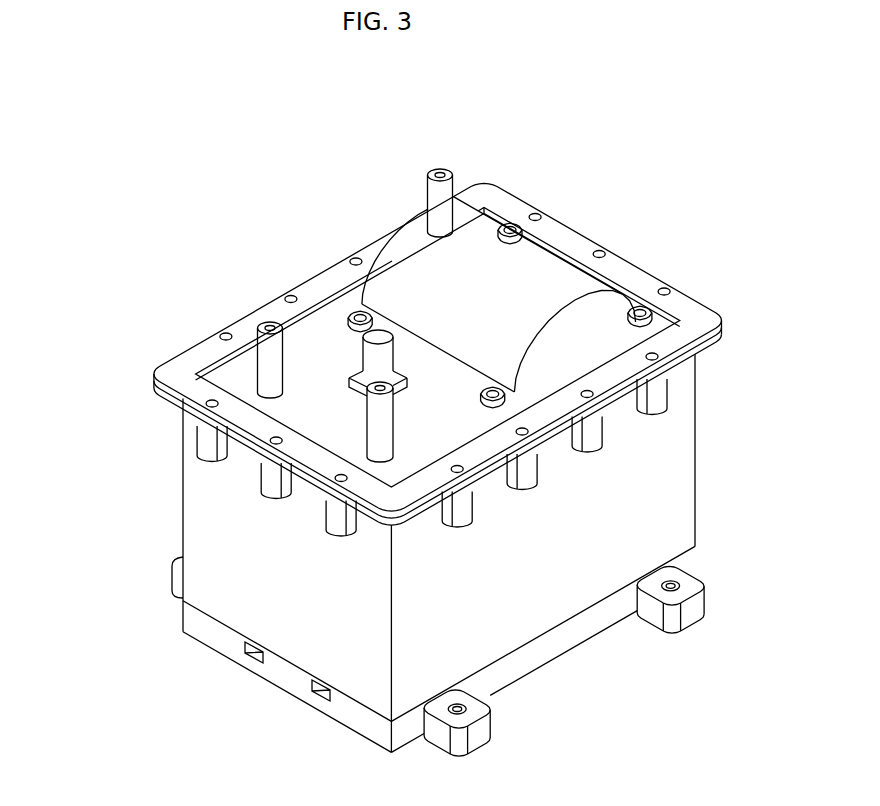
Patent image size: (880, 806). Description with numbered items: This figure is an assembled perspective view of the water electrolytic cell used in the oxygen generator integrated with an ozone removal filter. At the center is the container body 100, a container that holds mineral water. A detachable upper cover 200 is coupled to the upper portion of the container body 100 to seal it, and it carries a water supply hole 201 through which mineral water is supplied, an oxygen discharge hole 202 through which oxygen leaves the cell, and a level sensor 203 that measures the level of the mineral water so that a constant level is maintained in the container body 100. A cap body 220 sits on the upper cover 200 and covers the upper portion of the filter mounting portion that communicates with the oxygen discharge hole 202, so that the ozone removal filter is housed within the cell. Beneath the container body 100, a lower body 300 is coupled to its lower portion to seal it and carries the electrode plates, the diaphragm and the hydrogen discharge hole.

The container body 100 is at (200, 489).
The detachable upper cover 200 is at (178, 369).
The water supply hole 201 is at (267, 322).
The oxygen discharge hole 202 is at (452, 168).
The level sensor 203 is at (360, 312).
The cap body 220 is at (403, 224).
The lower body 300 is at (195, 621).